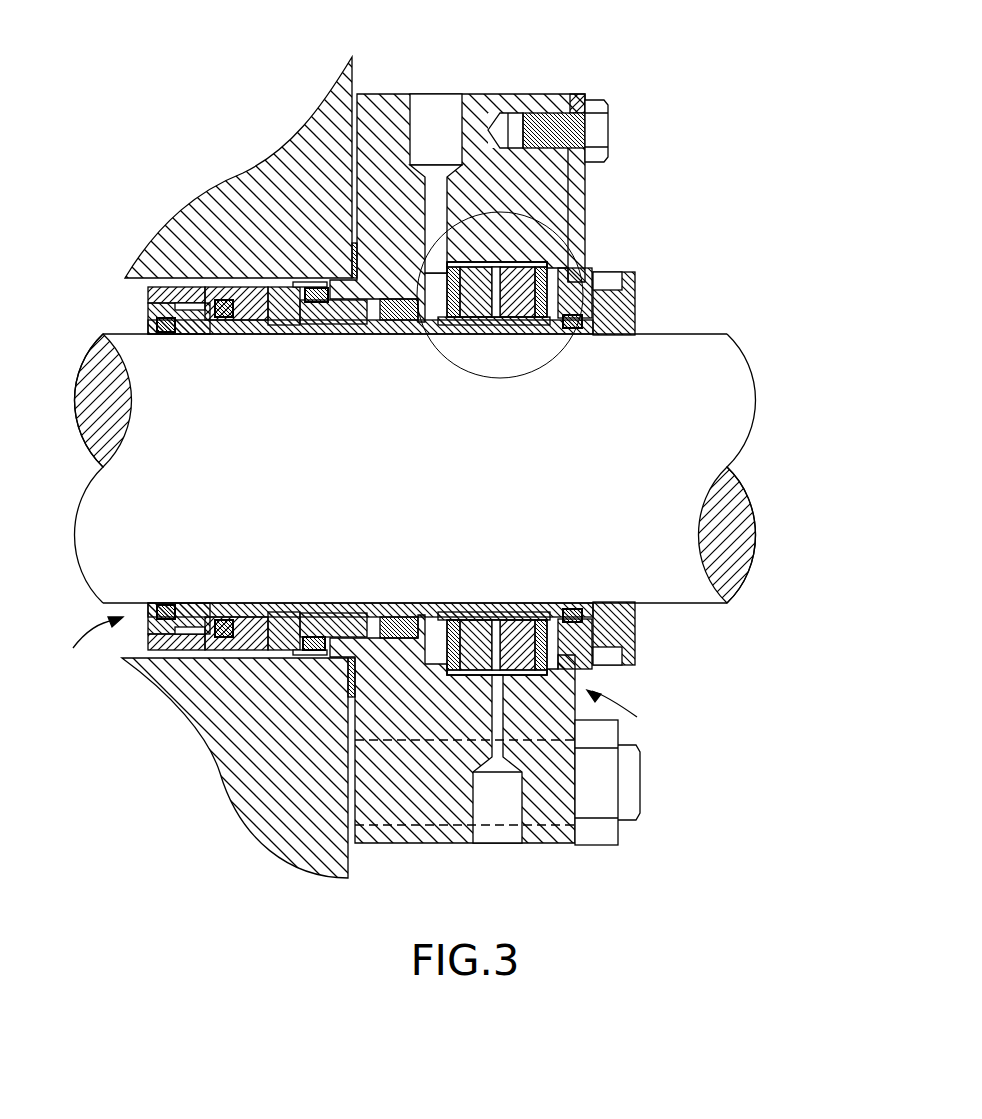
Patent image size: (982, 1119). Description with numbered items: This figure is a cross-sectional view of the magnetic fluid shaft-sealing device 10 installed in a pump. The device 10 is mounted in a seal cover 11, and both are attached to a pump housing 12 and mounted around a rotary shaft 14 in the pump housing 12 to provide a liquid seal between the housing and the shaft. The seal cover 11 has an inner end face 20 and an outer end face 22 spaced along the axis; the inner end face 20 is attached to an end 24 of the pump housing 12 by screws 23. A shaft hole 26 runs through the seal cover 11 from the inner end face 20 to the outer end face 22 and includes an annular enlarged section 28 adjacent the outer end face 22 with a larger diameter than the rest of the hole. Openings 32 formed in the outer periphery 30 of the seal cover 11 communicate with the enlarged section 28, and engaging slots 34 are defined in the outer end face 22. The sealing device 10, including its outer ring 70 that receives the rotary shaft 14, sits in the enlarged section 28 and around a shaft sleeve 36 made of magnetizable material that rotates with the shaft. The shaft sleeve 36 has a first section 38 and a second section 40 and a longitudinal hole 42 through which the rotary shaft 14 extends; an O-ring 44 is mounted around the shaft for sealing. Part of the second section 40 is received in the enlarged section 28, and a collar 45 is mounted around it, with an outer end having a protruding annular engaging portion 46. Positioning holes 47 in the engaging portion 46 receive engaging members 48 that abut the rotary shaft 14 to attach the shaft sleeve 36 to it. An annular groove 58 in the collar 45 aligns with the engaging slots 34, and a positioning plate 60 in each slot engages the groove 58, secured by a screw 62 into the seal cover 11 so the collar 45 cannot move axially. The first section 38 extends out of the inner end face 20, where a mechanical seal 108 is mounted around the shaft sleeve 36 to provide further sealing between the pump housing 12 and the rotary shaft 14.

The magnetic fluid shaft-sealing device 10 is at (627, 713).
The seal cover 11 is at (470, 112).
The pump housing 12 is at (213, 450).
The rotary shaft 14 is at (732, 390).
The inner end face 20 is at (494, 459).
The outer end face 22 is at (566, 100).
The screws 23 is at (640, 808).
The end of pump housing 24 is at (320, 115).
The shaft hole 26 is at (343, 643).
The annular enlarged section 28 is at (553, 272).
The outer periphery 30 is at (545, 843).
The openings 32 is at (507, 838).
The engaging slots 34 is at (574, 182).
The shaft sleeve 36 is at (587, 336).
The first section 38 is at (197, 615).
The second section 40 is at (572, 331).
The longitudinal hole 42 is at (225, 607).
The O-ring 44 is at (155, 328).
The collar 45 is at (542, 324).
The annular engaging portion 46 is at (632, 658).
The positioning holes 47 is at (614, 278).
The engaging members 48 is at (641, 288).
The annular groove 58 is at (582, 297).
The positioning plate 60 is at (571, 100).
The screw 62 is at (597, 108).
The outer ring 70 is at (530, 260).
The mechanical seal 108 is at (73, 658).